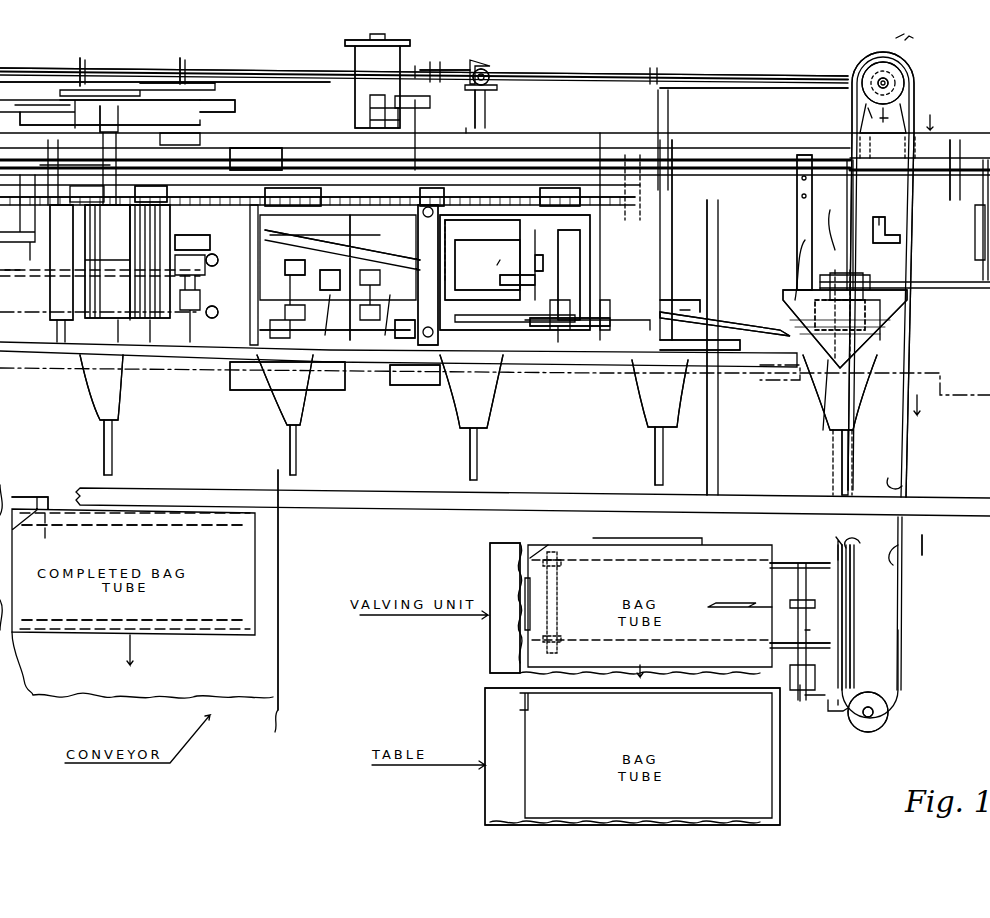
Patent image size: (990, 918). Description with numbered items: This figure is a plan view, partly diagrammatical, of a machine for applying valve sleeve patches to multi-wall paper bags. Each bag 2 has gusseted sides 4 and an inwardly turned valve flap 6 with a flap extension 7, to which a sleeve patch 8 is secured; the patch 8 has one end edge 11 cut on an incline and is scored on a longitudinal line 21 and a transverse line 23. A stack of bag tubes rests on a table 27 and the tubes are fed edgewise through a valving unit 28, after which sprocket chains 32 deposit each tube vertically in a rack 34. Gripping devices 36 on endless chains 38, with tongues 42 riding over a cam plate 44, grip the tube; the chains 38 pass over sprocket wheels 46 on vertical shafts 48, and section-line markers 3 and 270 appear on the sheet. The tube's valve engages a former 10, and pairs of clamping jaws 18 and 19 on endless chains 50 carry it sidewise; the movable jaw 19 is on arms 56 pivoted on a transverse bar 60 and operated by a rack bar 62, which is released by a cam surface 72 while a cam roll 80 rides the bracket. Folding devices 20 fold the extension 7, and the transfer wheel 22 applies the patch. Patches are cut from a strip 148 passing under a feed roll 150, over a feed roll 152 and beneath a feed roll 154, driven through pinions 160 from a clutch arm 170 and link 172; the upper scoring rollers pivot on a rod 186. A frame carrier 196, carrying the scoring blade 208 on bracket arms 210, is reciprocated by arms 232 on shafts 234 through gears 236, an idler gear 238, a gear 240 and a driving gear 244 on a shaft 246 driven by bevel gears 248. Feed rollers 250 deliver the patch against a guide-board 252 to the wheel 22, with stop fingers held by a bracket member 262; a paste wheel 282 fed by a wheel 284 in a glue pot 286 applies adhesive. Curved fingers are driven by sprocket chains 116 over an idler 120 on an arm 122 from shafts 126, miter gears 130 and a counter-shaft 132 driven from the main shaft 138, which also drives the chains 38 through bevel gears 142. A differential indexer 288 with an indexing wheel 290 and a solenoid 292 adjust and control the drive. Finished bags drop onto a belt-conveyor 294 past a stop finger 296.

The bag 2 is at (196, 433).
The section line 3 is at (866, 121).
The bellows or gusseted sides 4 is at (602, 385).
The valve flap 6 is at (608, 364).
The flap extension 7 is at (700, 311).
The sleeve patch 8 is at (522, 285).
The former 10 is at (899, 329).
The outer end edge of patch 11 is at (300, 243).
The clamping jaw 18 is at (680, 205).
The movable clamping jaw 19 is at (672, 248).
The folding devices 20 is at (745, 330).
The longitudinal score line 21 is at (458, 278).
The transverse roller 22 is at (540, 215).
The transverse score line 23 is at (456, 303).
The table 27 is at (780, 795).
The valving unit 28 is at (490, 556).
The sprocket chains 32 is at (790, 563).
The rack 34 is at (859, 620).
The gripping devices 36 is at (855, 300).
The endless chains 38 is at (914, 218).
The projecting tongue 42 is at (900, 570).
The cam plate 44 is at (856, 575).
The sprocket wheels 46 is at (905, 85).
The vertical shafts 48 is at (883, 85).
The endless chains 50 is at (960, 157).
The arms 56 is at (672, 235).
The transverse bar 60 is at (810, 157).
The rack bar 62 is at (672, 264).
The cam surface 72 is at (879, 225).
The cam roll 80 is at (672, 222).
The sprocket chains 116 is at (40, 102).
The idler 120 is at (205, 115).
The arm 122 is at (200, 122).
The shaft 126 is at (77, 114).
The miter gears 130 is at (90, 64).
The counter-shaft 132 is at (120, 68).
The driving shaft 138 is at (0, 70).
The bevel gears 142 is at (855, 65).
The strip 148 is at (210, 310).
The feed roll 150 is at (55, 320).
The feed roll 152 is at (90, 320).
The feed roll 154 is at (135, 320).
The pinions 160 is at (28, 195).
The arm 170 is at (160, 110).
The link 172 is at (210, 92).
The stationary shaft or rod 186 is at (178, 237).
The frame carrier 196 is at (350, 215).
The scoring blade 208 is at (222, 284).
The bracket arms 210 is at (305, 266).
The arms 232 is at (262, 150).
The shafts 234 is at (420, 232).
The gears 236 is at (300, 185).
The idler gear 238 is at (325, 185).
The gear 240 is at (490, 195).
The driving gear 244 is at (530, 190).
The shaft 246 is at (486, 106).
The bevel gears 248 is at (470, 76).
The feed rollers 250 is at (355, 273).
The guide-board 252 is at (395, 320).
The bracket member 262 is at (500, 265).
The pin 270 is at (510, 275).
The paste wheel 282 is at (550, 342).
The wheel 284 is at (578, 330).
The glue pot 286 is at (672, 298).
The differential indexer 288 is at (405, 58).
The indexing wheel 290 is at (410, 42).
The solenoid 292 is at (440, 120).
The belt-conveyor 294 is at (276, 613).
The stop finger 296 is at (335, 340).